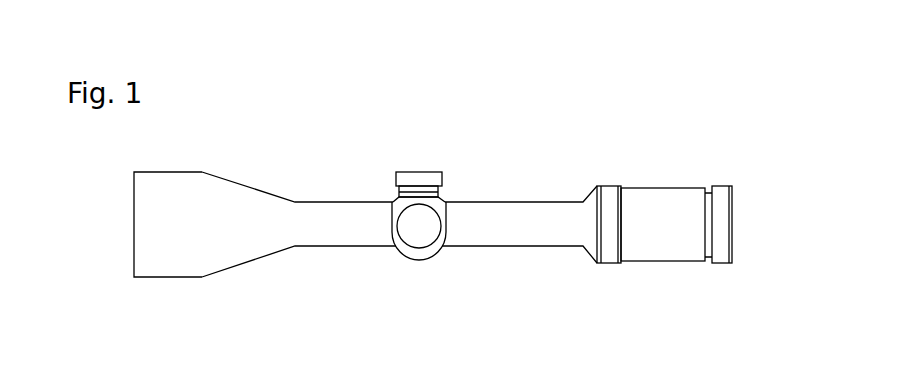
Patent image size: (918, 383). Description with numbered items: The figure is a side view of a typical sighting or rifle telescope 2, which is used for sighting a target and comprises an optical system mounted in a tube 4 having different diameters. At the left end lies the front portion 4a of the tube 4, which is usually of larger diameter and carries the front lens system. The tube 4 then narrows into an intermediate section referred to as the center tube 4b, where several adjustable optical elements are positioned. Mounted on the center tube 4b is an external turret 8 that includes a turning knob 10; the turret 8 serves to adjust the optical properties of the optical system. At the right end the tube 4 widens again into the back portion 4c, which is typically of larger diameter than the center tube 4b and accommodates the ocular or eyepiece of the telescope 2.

The rifle telescope 2 is at (541, 72).
The tube 4 is at (512, 247).
The front portion 4a is at (183, 277).
The center tube 4b is at (355, 247).
The back portion 4c is at (666, 261).
The external turret 8 is at (447, 235).
The turning knob 10 is at (442, 178).